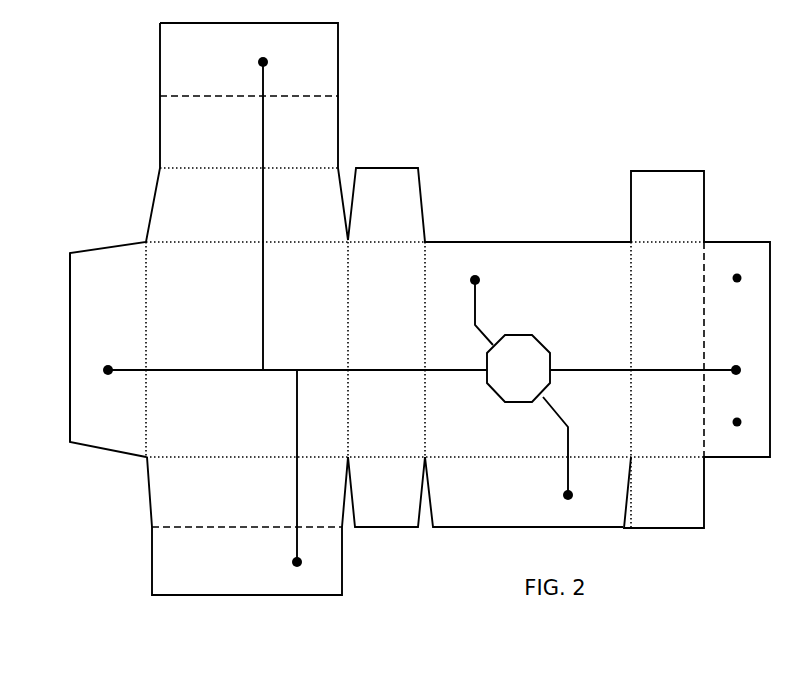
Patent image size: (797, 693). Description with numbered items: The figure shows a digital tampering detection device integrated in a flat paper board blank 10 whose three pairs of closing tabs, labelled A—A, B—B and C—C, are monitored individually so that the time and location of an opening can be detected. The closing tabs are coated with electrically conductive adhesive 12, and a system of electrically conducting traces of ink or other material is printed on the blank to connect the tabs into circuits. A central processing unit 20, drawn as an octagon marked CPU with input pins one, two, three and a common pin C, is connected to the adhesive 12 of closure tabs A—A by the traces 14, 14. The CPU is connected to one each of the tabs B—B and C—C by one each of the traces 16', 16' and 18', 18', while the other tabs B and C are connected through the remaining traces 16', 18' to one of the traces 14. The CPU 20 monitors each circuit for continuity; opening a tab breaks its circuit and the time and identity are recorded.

The blank 10 is at (475, 178).
The electrically conductive adhesive 12 is at (197, 65).
The electrically conducting traces 14 is at (193, 371).
The electrically conducting traces 16' is at (474, 470).
The electrically conducting traces 18' is at (378, 212).
The central processing unit (CPU) 20 is at (527, 360).